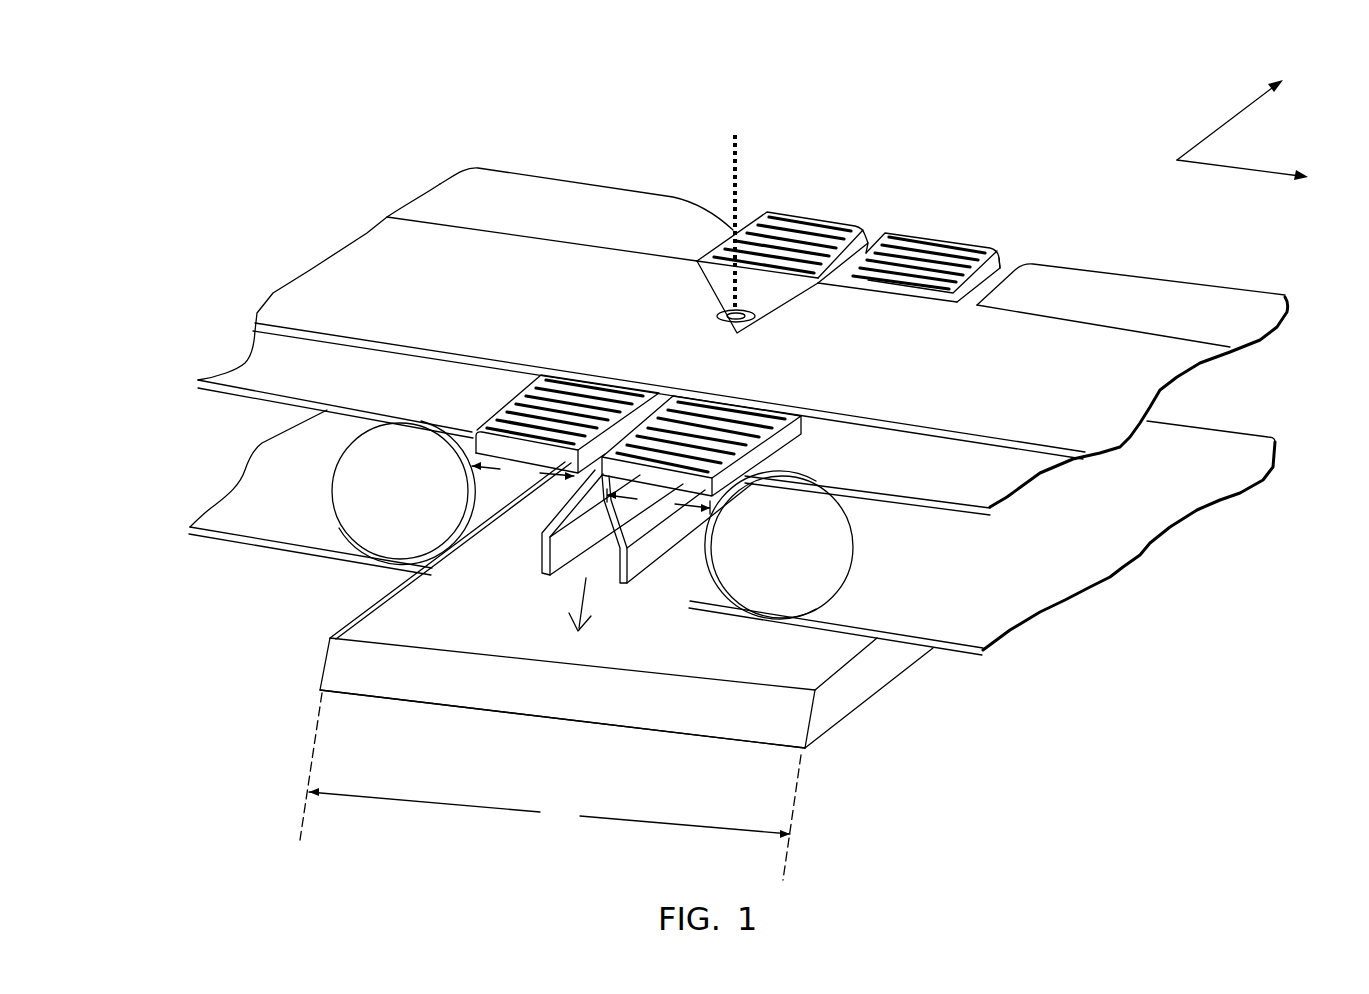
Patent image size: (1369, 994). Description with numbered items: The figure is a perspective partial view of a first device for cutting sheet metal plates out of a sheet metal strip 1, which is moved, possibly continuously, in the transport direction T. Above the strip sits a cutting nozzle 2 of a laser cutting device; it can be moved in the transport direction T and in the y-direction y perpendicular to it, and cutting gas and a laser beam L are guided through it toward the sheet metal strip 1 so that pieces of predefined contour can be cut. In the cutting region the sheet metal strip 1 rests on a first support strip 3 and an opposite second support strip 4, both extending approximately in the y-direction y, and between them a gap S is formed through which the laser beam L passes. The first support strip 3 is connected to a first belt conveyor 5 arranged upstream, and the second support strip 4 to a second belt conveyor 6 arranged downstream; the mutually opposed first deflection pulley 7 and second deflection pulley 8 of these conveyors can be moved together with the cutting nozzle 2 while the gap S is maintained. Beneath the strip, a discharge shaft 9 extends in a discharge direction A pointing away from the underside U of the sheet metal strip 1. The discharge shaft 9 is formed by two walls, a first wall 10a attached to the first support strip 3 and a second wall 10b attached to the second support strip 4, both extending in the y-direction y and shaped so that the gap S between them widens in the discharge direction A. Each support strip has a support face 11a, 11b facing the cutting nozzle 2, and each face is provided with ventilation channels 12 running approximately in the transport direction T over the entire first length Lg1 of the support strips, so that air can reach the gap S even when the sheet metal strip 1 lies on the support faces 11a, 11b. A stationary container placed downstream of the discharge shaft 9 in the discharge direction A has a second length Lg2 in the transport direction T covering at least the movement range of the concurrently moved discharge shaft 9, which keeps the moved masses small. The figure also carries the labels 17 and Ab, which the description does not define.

The sheet metal strip 1 is at (470, 290).
The cutting nozzle 2 is at (715, 312).
The first support strip 3 is at (783, 212).
The second support strip 4 is at (970, 243).
The first belt conveyor 5 is at (360, 433).
The second belt conveyor 6 is at (967, 600).
The first deflection pulley 7 is at (250, 510).
The second deflection pulley 8 is at (787, 570).
The discharge shaft 9 is at (600, 566).
The first wall 10a is at (575, 478).
The second wall 10b is at (637, 530).
The support face 11a is at (563, 393).
The support face 11b is at (996, 250).
The ventilation channels 12 is at (367, 478).
The raised plate portion 17 is at (787, 294).
The laser beam L is at (723, 164).
The gap S is at (880, 232).
The underside U is at (817, 425).
The discharge direction A is at (572, 606).
The block front face Ab is at (437, 672).
The first length Lg1 is at (591, 488).
The second length Lg2 is at (550, 786).
The y-direction y is at (1239, 117).
The transport direction T is at (1242, 178).